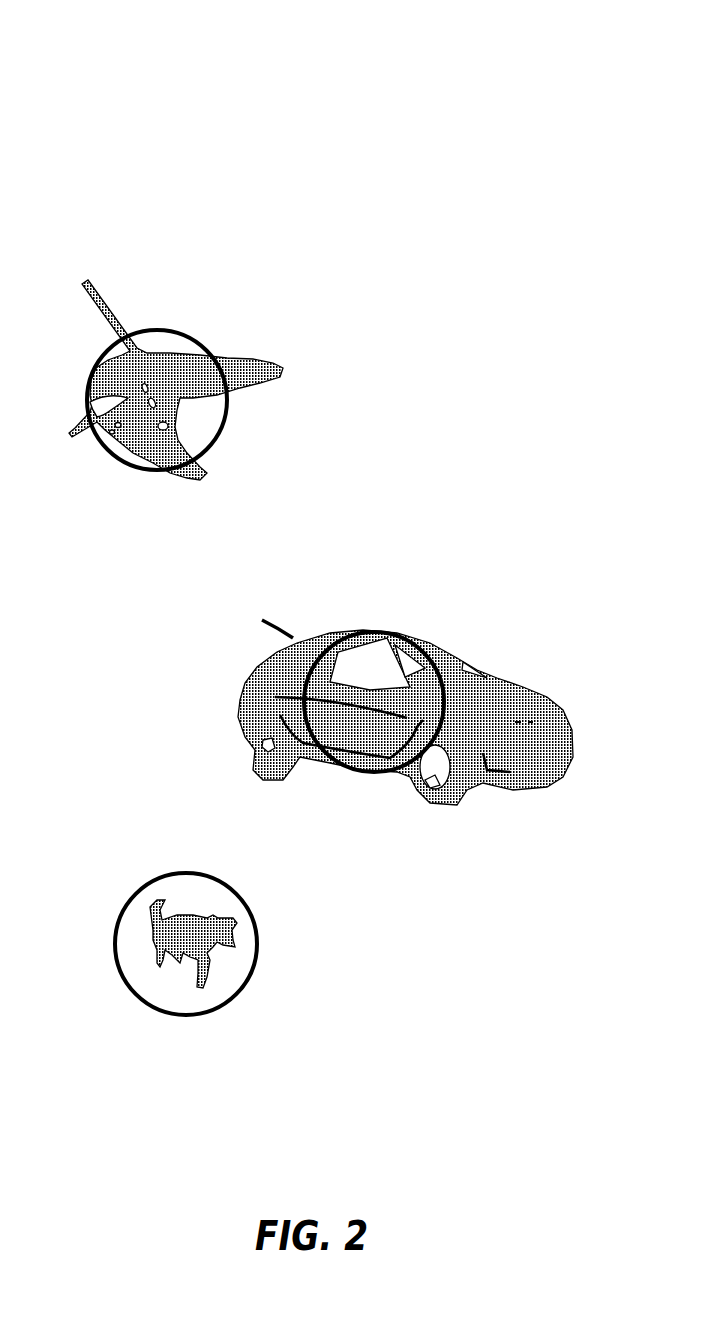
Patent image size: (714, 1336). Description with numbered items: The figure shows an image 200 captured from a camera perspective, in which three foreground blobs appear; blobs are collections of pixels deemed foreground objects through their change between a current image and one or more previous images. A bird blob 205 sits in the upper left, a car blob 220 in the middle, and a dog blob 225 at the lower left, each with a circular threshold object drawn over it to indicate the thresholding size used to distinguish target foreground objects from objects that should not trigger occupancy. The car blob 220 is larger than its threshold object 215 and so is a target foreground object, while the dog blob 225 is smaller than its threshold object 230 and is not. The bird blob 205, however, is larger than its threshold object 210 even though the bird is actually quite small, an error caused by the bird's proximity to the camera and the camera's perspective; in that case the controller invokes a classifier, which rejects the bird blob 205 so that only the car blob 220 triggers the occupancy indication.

The image 200 is at (572, 45).
The bird blob 205 is at (264, 358).
The threshold object 210 is at (120, 357).
The threshold object 215 is at (374, 633).
The car blob 220 is at (258, 649).
The dog blob 225 is at (157, 930).
The threshold object 230 is at (157, 882).